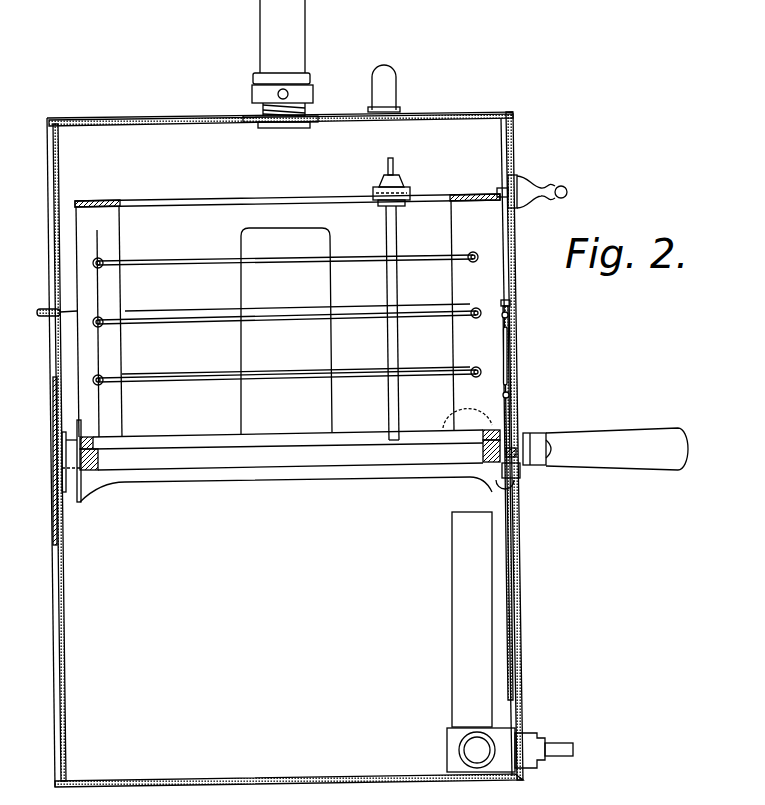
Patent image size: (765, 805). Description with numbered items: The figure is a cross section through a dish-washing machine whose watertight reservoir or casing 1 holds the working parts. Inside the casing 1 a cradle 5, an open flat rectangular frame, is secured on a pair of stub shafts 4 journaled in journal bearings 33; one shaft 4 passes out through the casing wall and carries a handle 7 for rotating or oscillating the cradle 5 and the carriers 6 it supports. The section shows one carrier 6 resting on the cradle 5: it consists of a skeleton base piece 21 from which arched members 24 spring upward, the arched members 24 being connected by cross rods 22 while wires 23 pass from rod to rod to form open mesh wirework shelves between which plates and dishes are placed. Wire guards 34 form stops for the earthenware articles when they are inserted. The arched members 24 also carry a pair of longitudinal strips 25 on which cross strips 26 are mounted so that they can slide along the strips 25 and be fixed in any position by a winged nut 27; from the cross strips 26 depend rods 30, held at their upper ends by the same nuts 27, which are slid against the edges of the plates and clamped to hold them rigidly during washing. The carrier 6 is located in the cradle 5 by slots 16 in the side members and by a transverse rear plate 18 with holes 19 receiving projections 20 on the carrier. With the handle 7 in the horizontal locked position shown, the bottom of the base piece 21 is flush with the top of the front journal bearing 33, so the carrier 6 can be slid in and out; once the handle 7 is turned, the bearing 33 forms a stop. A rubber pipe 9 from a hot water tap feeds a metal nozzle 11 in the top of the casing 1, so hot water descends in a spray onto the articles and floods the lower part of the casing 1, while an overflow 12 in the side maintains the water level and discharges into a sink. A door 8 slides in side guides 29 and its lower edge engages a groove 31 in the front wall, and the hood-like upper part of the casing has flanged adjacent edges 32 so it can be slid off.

The casing 1 is at (517, 573).
The stub shafts 4 is at (54, 466).
The cradle 5 is at (92, 462).
The carriers 6 is at (147, 208).
The handle 7 is at (594, 437).
The door 8 is at (515, 257).
The rubber pipe 9 is at (297, 61).
The metal nozzle 11 is at (262, 112).
The overflow 12 is at (458, 588).
The slots 16 is at (493, 420).
The rear plate 18 is at (76, 430).
The holes 19 is at (78, 474).
The projections 20 is at (80, 440).
The skeleton base piece 21 is at (182, 440).
The cross rods 22 is at (103, 261).
The wires 23 is at (187, 262).
The arched members 24 is at (91, 212).
The longitudinal strips 25 is at (282, 200).
The cross strips 26 is at (411, 194).
The winged nut 27 is at (384, 181).
The side guides 29 is at (511, 352).
The rods 30 is at (398, 234).
The groove 31 is at (516, 497).
The adjacent edges 32 is at (43, 316).
The journal bearings 33 is at (62, 448).
The wire guards 34 is at (299, 229).